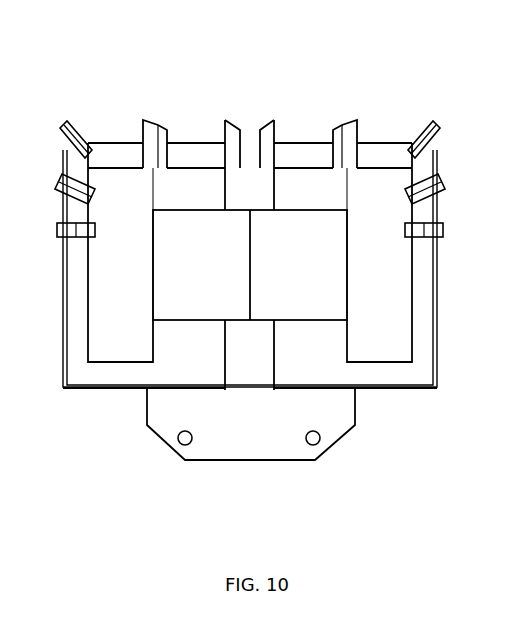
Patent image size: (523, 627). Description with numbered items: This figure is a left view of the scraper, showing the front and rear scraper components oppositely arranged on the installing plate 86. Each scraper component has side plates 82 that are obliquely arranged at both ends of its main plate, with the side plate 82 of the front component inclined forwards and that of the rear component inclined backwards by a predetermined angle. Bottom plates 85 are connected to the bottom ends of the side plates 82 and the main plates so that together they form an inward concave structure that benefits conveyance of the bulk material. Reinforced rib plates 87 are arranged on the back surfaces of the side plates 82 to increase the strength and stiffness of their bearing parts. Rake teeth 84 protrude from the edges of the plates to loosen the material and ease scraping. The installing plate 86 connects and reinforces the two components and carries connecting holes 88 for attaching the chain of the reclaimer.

The side plate 82 is at (398, 368).
The rake tooth 84 is at (267, 130).
The bottom plate 85 is at (122, 390).
The installing plate 86 is at (250, 428).
The reinforced rib plate 87 is at (207, 205).
The connecting hole 88 is at (318, 445).